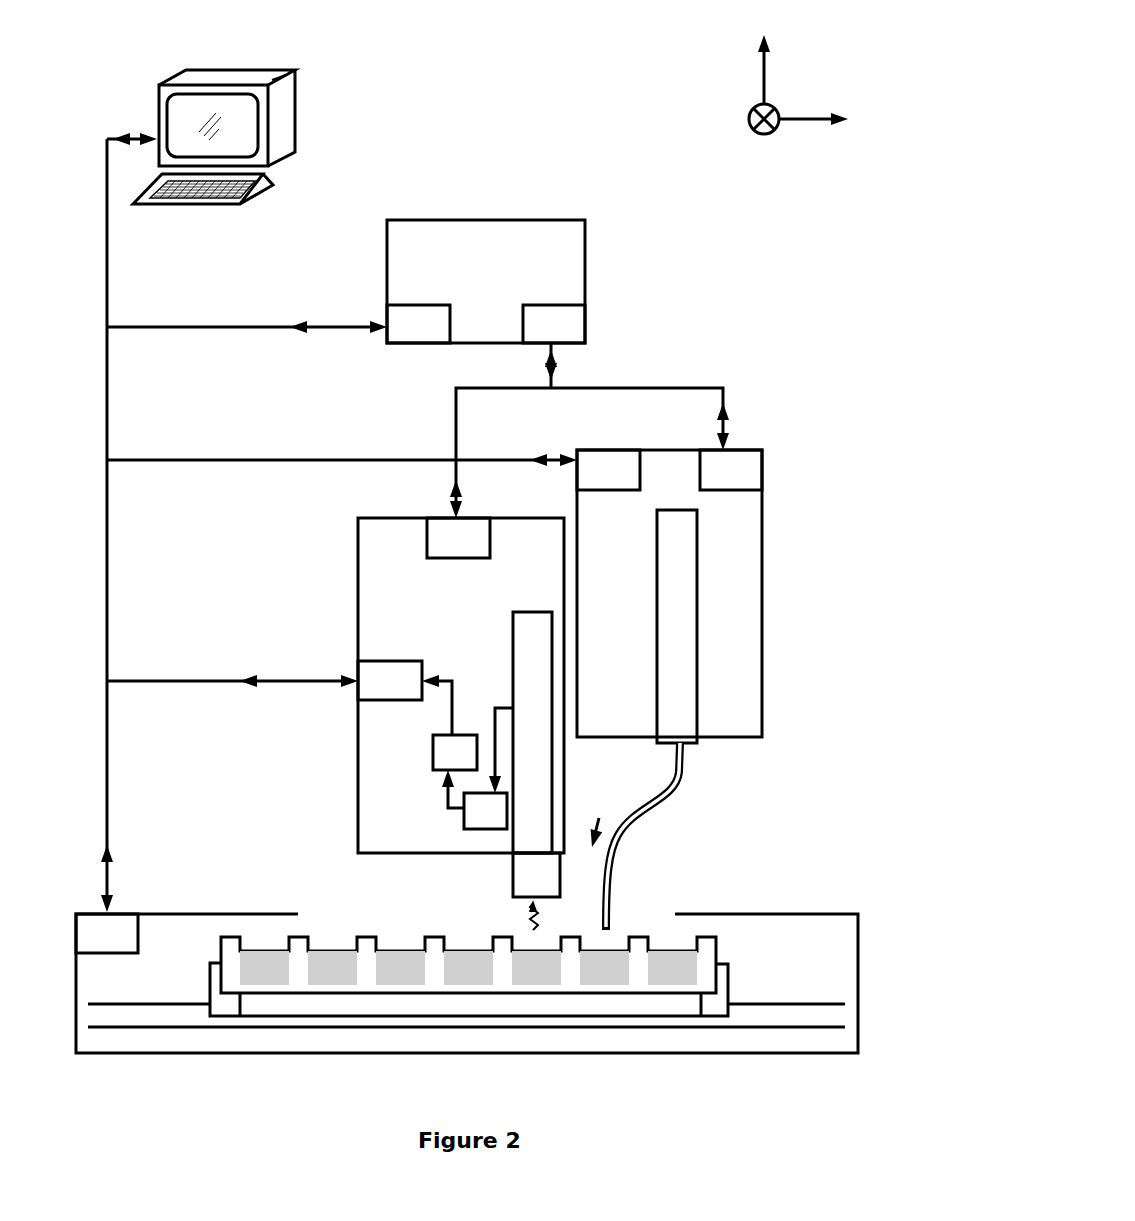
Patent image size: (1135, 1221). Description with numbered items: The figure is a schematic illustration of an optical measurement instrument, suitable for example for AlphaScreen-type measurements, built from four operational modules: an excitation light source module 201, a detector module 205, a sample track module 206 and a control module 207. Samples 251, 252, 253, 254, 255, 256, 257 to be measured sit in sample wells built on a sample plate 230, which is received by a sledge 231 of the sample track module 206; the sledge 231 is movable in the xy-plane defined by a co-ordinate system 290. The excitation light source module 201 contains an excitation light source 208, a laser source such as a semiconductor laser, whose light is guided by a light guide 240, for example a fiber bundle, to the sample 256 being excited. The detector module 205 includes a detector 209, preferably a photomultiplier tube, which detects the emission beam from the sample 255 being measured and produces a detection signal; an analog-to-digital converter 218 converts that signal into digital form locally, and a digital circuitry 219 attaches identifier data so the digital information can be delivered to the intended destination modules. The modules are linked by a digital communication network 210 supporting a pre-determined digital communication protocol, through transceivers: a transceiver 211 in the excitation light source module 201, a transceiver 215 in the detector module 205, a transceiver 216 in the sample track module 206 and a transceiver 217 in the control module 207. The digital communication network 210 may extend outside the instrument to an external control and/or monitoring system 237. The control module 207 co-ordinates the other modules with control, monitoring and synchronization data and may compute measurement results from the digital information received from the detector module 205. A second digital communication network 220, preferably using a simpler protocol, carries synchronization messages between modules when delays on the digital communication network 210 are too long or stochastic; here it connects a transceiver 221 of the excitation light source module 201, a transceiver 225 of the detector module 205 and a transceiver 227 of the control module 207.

The excitation light source module 201 is at (762, 573).
The detector module 205 is at (358, 583).
The sample track module 206 is at (735, 915).
The control module 207 is at (445, 220).
The excitation light source 208 is at (697, 655).
The detector 209 is at (535, 612).
The digital communication network 210 is at (107, 290).
The transceiver 211 is at (620, 450).
The transceiver 215 is at (378, 661).
The transceiver 216 is at (85, 953).
The transceiver 217 is at (450, 322).
The analog-to-digital converter 218 is at (464, 815).
The digital circuitry 219 is at (433, 750).
The digital communication network 220 is at (685, 388).
The transceiver 221 is at (742, 450).
The transceiver 225 is at (470, 518).
The transceiver 227 is at (585, 318).
The sample plate 230 is at (718, 946).
The sledge 231 is at (730, 978).
The external control and/or monitoring system 237 is at (288, 118).
The light guide 240 is at (676, 775).
The sample 251 is at (264, 968).
The sample 252 is at (332, 968).
The sample 253 is at (400, 968).
The sample 254 is at (468, 968).
The sample 255 is at (536, 968).
The sample 256 is at (604, 968).
The sample 257 is at (672, 968).
The co-ordinate system 290 is at (792, 63).